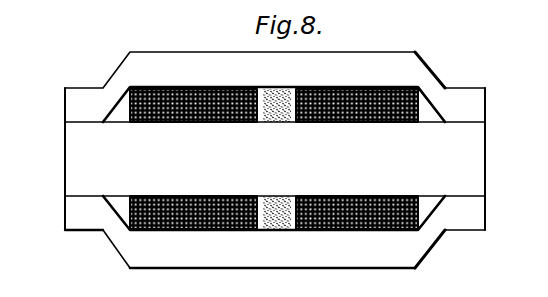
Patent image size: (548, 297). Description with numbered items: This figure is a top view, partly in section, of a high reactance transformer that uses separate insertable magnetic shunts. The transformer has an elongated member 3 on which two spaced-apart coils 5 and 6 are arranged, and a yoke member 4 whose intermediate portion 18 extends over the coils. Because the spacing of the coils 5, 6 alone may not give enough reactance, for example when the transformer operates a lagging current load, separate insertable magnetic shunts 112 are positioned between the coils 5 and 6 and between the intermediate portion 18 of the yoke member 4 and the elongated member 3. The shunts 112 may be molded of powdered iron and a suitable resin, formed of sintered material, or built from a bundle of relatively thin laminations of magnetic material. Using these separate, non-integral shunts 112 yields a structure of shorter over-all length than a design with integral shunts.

The yoke member 4 is at (275, 136).
The intermediate portion 18 is at (274, 161).
The elongated member 3 is at (253, 159).
The coil 5 is at (193, 159).
The magnetic shunt 112 is at (277, 159).
The coil 6 is at (357, 159).